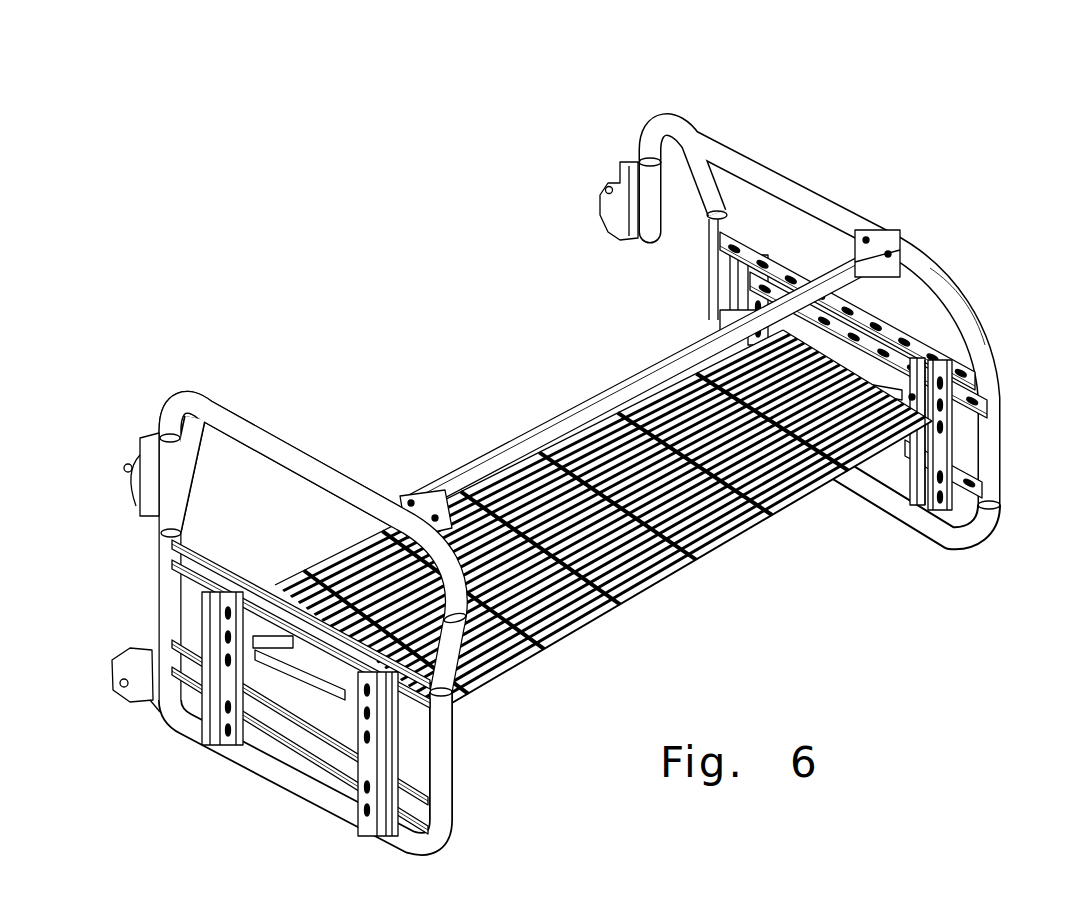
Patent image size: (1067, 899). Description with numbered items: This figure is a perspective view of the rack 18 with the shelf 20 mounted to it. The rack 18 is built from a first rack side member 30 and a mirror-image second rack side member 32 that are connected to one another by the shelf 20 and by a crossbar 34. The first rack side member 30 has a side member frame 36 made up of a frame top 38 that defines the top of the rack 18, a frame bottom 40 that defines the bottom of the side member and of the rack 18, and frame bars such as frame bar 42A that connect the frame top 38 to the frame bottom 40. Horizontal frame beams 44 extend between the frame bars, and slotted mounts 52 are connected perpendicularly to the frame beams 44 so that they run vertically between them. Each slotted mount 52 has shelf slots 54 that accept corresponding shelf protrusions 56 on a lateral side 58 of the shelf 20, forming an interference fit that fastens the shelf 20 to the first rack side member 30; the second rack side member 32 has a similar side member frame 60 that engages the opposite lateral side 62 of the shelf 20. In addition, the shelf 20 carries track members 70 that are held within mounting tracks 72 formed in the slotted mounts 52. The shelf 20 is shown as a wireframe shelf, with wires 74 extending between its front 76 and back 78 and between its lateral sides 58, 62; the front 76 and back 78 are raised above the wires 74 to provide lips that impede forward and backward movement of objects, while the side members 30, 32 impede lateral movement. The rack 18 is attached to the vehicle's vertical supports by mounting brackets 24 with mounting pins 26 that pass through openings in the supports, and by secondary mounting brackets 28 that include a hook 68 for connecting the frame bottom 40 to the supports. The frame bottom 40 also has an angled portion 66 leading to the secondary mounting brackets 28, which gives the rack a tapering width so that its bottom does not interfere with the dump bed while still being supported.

The rack 18 is at (893, 195).
The shelf 20 is at (615, 632).
The mounting bracket 24 is at (147, 497).
The mounting pin 26 is at (128, 470).
The secondary mounting bracket 28 is at (130, 685).
The first rack side member 30 is at (472, 797).
The second rack side member 32 is at (990, 555).
The crossbar 34 is at (846, 268).
The side member frame 36 is at (456, 690).
The frame top 38 is at (793, 180).
The frame bottom 40 is at (885, 500).
The frame bar 42A is at (160, 590).
The frame beam 44 is at (302, 645).
The slotted mount 52 is at (233, 724).
The shelf slot 54 is at (395, 728).
The shelf protrusion 56 is at (925, 395).
The lateral side 58 is at (337, 674).
The side member frame 60 is at (988, 335).
The lateral side 62 is at (837, 362).
The angled portion 66 is at (148, 712).
The hook 68 is at (122, 663).
The track member 70 is at (919, 352).
The mounting track 72 is at (912, 372).
The wire 74 is at (672, 513).
The front 76 is at (481, 455).
The back 78 is at (690, 577).